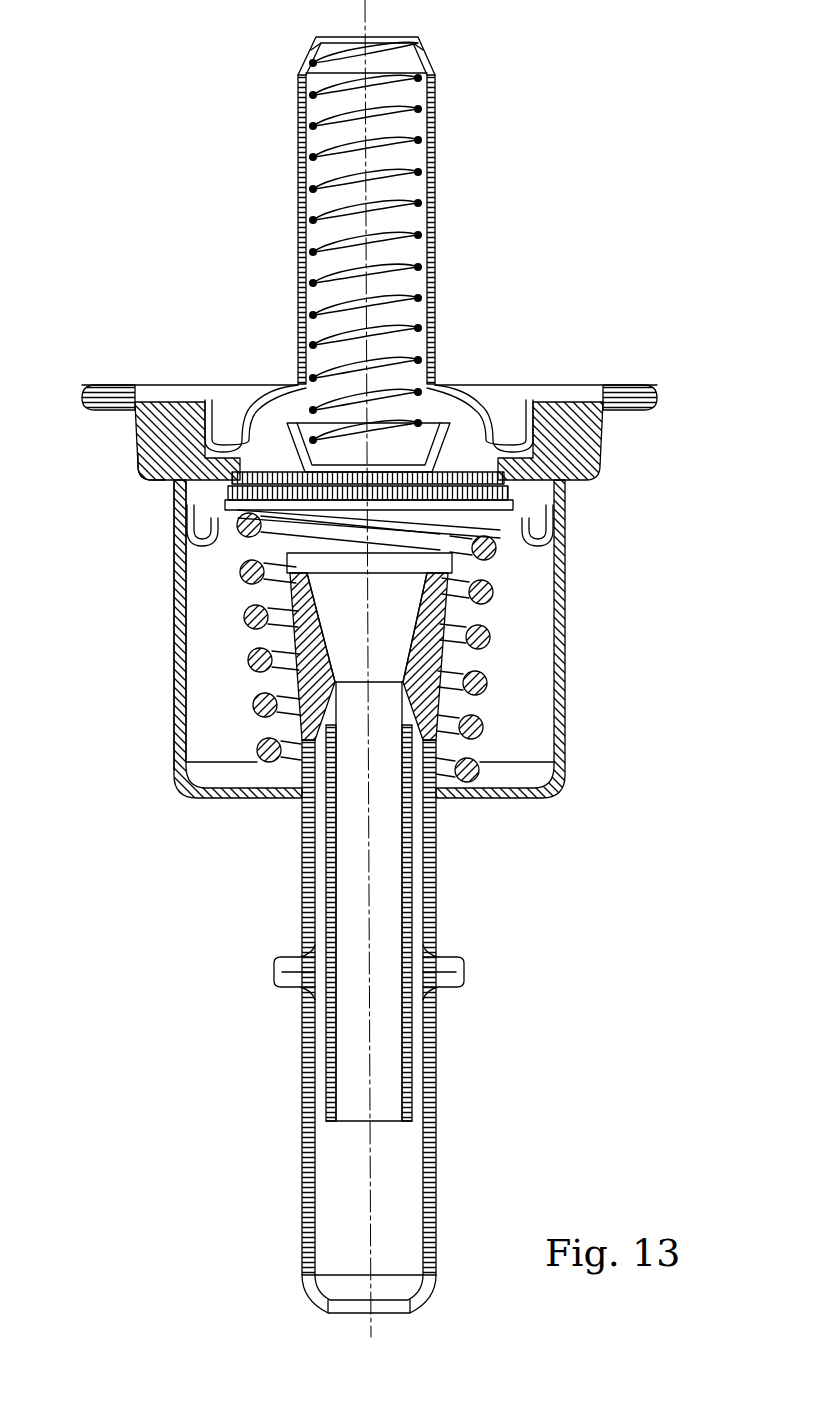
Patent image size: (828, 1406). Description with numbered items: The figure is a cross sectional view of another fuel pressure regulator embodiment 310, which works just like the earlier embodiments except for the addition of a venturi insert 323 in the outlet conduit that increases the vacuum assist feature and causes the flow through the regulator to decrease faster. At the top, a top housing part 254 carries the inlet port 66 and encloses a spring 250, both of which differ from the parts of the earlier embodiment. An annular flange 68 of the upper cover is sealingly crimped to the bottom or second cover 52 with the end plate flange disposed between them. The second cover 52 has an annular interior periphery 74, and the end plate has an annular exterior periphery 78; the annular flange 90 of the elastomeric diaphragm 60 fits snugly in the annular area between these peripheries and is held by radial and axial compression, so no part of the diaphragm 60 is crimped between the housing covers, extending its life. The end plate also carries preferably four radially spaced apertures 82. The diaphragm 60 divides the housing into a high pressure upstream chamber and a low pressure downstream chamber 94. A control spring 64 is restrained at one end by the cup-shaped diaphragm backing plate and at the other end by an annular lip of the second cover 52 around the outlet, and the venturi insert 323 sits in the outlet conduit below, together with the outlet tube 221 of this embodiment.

The FIG. 13 embodiment 310 is at (486, 307).
The inlet port 66 is at (388, 36).
The spring 250 is at (434, 232).
The top housing part 254 is at (433, 166).
The annular flange 68 is at (641, 385).
The annular interior periphery 74 is at (154, 412).
The annular exterior periphery 78 is at (145, 463).
The annular flange 90 is at (588, 440).
The radially spaced apertures 82 is at (226, 478).
The diaphragm 60 is at (548, 532).
The second cover 52 is at (370, 639).
The low pressure downstream chamber 94 is at (197, 703).
The control spring 64 is at (490, 672).
The venturi insert 323 is at (430, 640).
The piston tube 221 is at (440, 888).